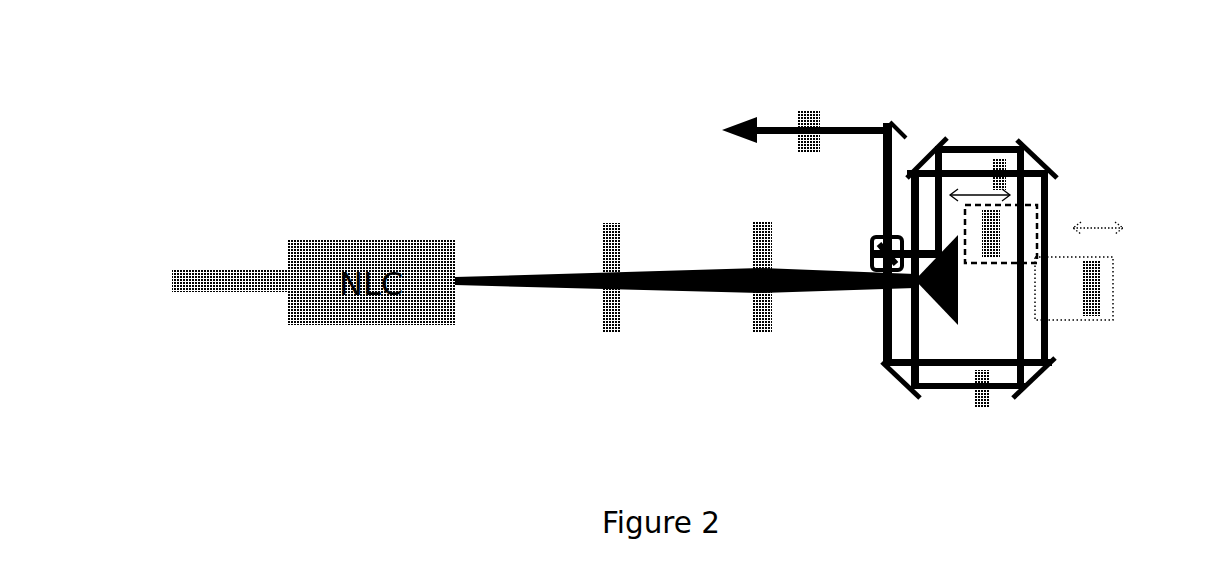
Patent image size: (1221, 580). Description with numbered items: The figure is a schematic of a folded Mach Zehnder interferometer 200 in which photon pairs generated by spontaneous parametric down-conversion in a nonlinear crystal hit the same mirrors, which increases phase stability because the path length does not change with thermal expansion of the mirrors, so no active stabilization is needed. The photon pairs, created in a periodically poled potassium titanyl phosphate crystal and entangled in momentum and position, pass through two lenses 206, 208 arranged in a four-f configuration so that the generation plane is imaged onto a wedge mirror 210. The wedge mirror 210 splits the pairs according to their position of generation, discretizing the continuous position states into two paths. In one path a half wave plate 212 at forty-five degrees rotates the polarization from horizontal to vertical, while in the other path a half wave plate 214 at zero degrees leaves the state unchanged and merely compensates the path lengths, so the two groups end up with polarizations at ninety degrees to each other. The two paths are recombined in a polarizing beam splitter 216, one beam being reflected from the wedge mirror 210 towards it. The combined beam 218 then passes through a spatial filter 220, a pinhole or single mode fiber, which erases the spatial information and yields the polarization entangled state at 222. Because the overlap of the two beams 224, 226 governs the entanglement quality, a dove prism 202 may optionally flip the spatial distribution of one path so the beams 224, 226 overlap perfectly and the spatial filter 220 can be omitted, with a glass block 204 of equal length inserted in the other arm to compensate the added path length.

The folded Mach Zehnder interferometer 200 is at (1090, 150).
The dove prism 202 is at (1100, 280).
The glass block 204 is at (1000, 237).
The lens 206 is at (602, 243).
The lens 208 is at (752, 235).
The wedge mirror 210 is at (932, 295).
The half wave plate 212 is at (984, 405).
The half wave plate 214 is at (997, 160).
The polarizing beam splitter 216 is at (873, 250).
The combined beam 218 is at (848, 128).
The spatial filter 220 is at (799, 115).
The polarization entangled state 222 is at (727, 128).
The beam 224 is at (958, 392).
The beam 226 is at (912, 338).